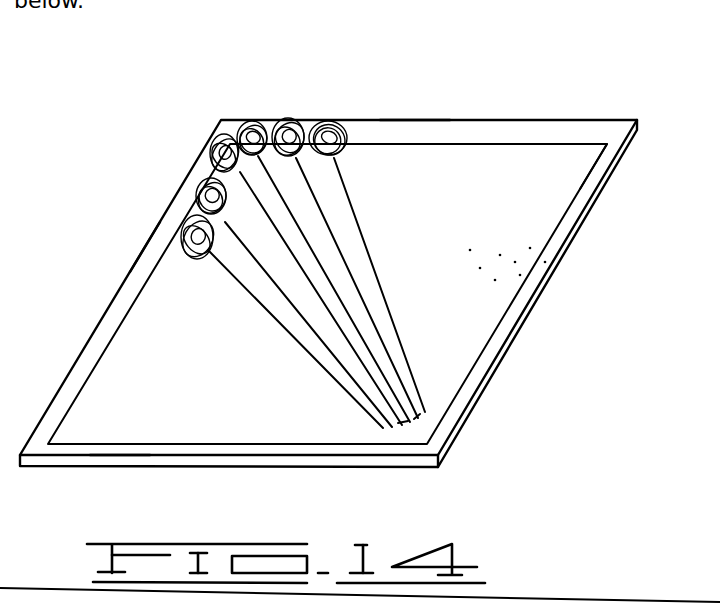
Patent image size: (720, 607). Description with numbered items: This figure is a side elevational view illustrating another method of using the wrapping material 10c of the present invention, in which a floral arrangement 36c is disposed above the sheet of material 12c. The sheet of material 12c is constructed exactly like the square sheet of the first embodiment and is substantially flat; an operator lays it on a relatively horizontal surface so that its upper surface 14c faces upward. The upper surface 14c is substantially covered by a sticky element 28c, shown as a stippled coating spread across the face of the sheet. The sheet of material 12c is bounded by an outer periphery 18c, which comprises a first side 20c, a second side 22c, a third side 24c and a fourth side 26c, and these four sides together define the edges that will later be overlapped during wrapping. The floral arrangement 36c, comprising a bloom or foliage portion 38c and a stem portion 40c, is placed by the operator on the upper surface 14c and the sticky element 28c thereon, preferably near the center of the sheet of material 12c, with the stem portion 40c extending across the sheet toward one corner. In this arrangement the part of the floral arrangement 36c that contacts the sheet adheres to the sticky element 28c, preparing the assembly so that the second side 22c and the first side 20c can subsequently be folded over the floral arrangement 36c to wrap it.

The wrapping material 10c is at (380, 92).
The sheet of material 12c is at (522, 108).
The upper surface 14c is at (607, 152).
The outer periphery 18c is at (152, 467).
The first side 20c is at (530, 310).
The second side 22c is at (143, 246).
The third side 24c is at (413, 115).
The fourth side 26c is at (120, 458).
The sticky element 28c is at (492, 258).
The floral arrangement 36c is at (250, 113).
The bloom or foliage portion 38c is at (285, 118).
The stem portion 40c is at (370, 412).